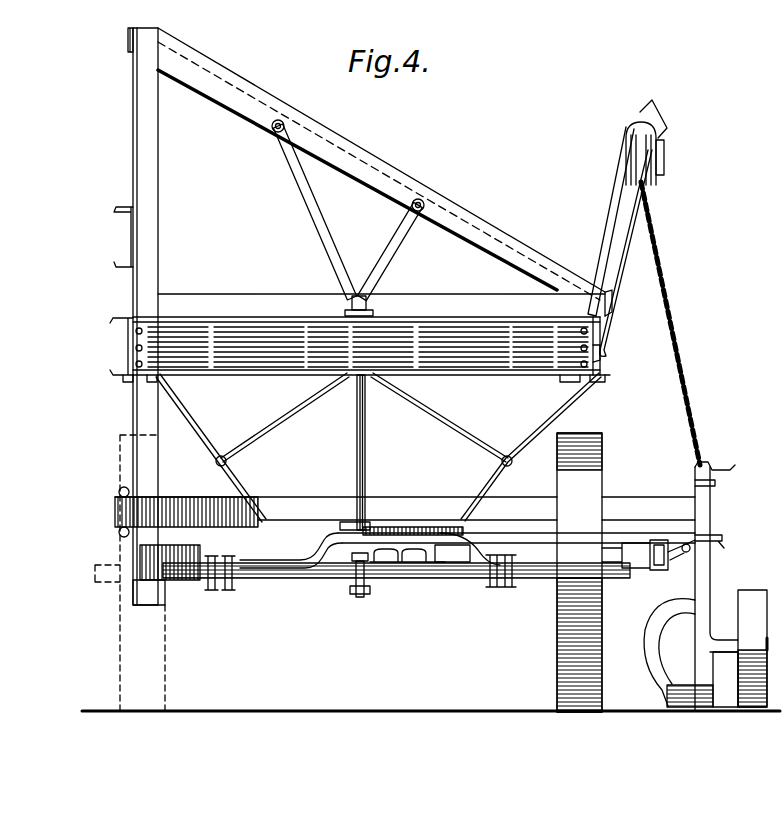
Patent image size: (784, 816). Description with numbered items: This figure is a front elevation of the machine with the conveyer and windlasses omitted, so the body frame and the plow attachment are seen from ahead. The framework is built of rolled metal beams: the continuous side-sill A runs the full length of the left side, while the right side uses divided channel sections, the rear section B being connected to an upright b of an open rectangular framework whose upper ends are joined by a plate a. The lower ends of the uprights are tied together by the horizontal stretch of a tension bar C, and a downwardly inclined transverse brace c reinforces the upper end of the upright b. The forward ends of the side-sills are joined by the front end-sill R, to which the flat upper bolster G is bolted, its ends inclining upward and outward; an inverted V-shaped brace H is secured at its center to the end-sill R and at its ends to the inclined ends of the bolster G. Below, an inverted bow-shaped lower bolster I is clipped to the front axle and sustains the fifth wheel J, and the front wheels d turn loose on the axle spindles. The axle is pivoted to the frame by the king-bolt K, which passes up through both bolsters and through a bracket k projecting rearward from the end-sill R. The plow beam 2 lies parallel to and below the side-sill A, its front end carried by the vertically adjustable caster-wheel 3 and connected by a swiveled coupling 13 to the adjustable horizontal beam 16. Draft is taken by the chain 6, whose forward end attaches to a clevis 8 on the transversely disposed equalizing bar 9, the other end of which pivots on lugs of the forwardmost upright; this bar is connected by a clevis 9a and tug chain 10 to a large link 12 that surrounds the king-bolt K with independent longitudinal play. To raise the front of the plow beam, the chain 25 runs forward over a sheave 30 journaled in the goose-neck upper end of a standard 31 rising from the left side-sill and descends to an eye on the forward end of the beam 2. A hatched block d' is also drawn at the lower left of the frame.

The plate a is at (130, 48).
The upright b is at (162, 258).
The transverse brace c is at (253, 112).
The tension bar C is at (256, 300).
The bracket k is at (348, 300).
The rear aligning section of right hand side-sill B is at (131, 352).
The front end-sill R is at (368, 347).
The inverted V-shaped brace H is at (304, 404).
The upper bolster G is at (189, 417).
The king-bolt K is at (357, 433).
The transversely adjustable horizontal beam 16 is at (388, 505).
The slide block d' is at (170, 512).
The lower bolster I is at (272, 550).
The fifth wheel J is at (328, 535).
The large link 12 is at (345, 567).
The tug chain 10 is at (392, 567).
The clevis 9a is at (447, 567).
The equalizing bar 9 is at (538, 558).
The front wheel d is at (592, 572).
The swiveled coupling 13 is at (655, 543).
The plow beam 2 is at (722, 543).
The draft chain 6 is at (688, 553).
The caster-wheel 3 is at (747, 590).
The side-sill A is at (608, 360).
The clevis 8 is at (612, 322).
The standard 31 is at (610, 220).
The sheave 30 is at (672, 172).
The chain 25 is at (683, 375).